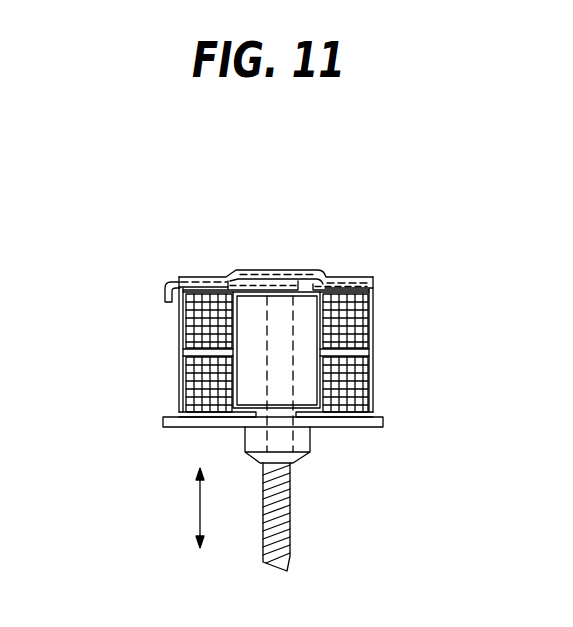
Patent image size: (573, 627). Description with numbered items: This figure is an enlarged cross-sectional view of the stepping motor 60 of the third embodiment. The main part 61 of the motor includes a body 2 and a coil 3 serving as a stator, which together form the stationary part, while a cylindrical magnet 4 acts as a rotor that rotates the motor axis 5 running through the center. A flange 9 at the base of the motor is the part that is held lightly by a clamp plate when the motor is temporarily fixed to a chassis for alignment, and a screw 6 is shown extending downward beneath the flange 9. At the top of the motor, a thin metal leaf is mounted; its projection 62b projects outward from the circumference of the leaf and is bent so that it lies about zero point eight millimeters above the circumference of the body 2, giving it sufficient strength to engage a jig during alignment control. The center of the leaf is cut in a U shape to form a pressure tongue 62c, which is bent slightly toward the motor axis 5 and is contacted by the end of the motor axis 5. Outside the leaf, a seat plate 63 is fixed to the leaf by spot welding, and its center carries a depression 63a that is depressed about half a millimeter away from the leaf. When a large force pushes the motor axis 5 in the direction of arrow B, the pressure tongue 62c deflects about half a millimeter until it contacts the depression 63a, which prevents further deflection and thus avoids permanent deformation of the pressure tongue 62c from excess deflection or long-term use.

The stepping motor 60 is at (140, 198).
The main part of the motor 61 is at (148, 406).
The body 2 is at (178, 390).
The coil 3 is at (350, 278).
The cylindrical magnet 4 is at (303, 383).
The motor axis 5 is at (278, 350).
The screw 6 is at (290, 547).
The flange 9 is at (377, 428).
The projection 62b is at (160, 300).
The pressure tongue 62c is at (292, 284).
The seat plate 63 is at (227, 277).
The depression 63a is at (268, 270).